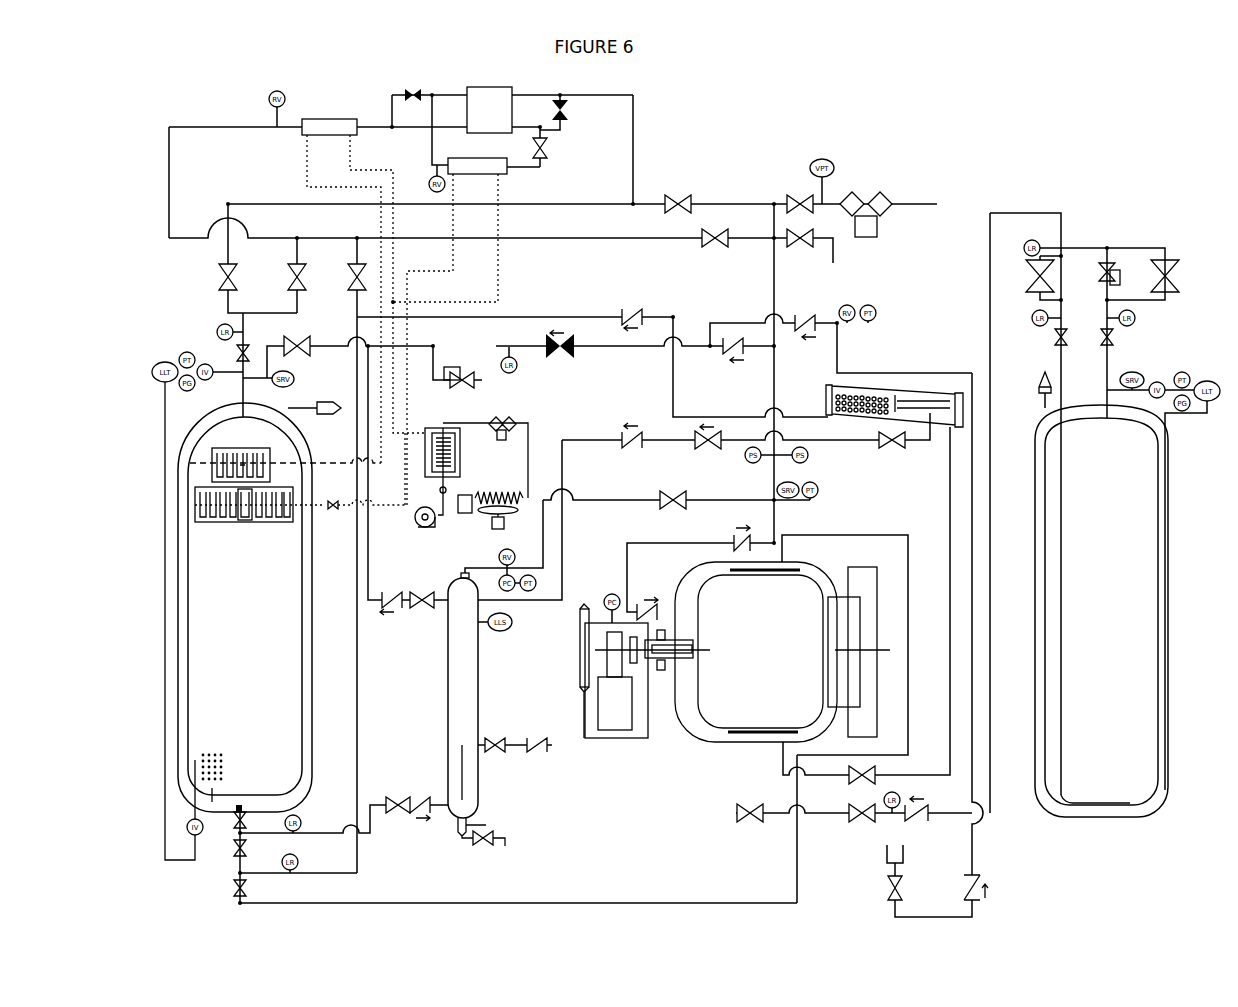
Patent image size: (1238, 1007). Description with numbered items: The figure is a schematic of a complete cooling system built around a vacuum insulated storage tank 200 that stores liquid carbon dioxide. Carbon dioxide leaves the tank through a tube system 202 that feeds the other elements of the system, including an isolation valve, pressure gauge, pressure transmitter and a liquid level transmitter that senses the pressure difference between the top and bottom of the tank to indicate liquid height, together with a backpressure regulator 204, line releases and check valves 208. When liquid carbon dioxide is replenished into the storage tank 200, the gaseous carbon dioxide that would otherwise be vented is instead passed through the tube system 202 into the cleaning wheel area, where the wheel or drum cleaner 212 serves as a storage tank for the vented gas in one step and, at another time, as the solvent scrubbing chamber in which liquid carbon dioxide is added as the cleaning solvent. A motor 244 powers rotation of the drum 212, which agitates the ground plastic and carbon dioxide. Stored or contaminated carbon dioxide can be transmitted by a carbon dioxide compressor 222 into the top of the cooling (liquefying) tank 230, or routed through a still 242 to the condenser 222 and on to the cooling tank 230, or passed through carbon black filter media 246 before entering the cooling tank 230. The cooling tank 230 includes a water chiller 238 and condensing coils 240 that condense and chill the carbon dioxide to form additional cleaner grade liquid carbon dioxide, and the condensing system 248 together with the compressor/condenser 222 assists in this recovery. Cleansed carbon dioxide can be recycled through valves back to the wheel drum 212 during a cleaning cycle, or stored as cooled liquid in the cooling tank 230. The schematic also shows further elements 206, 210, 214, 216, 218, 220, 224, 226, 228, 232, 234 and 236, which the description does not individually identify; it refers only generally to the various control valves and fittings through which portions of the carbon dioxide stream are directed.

The vacuum insulated storage tank 200 is at (1101, 611).
The tube system 202 is at (1121, 341).
The backpressure regulator 204 is at (1122, 274).
The valve 206 is at (1178, 276).
The check valves 208 is at (918, 818).
The valve 210 is at (860, 822).
The wheel drum 212 is at (782, 652).
The valve 214 is at (801, 248).
The valve 216 is at (800, 196).
The strainer 218 is at (866, 206).
The valve 220 is at (678, 193).
The carbon dioxide compressor 222 is at (489, 110).
The valve 224 is at (284, 277).
The valve 226 is at (343, 277).
The valve 228 is at (251, 849).
The cooling tank 230 is at (245, 607).
The valve 232 is at (224, 353).
The valve 234 is at (229, 820).
The heater element 236 is at (225, 778).
The water chiller 238 is at (471, 473).
The condensing coils 240 is at (245, 485).
The still 242 is at (476, 709).
The motor 244 is at (630, 671).
The filter media 246 is at (894, 406).
The condensing system 248 is at (404, 146).